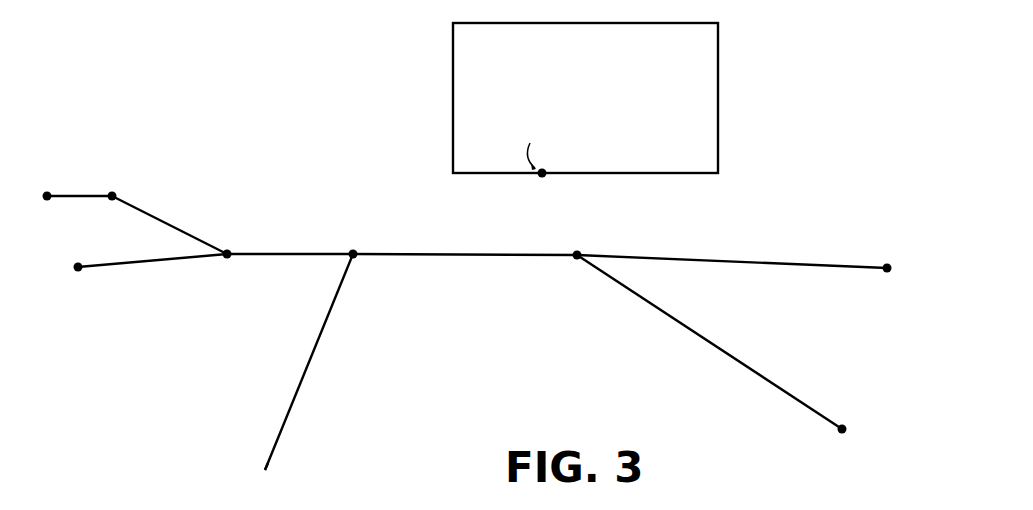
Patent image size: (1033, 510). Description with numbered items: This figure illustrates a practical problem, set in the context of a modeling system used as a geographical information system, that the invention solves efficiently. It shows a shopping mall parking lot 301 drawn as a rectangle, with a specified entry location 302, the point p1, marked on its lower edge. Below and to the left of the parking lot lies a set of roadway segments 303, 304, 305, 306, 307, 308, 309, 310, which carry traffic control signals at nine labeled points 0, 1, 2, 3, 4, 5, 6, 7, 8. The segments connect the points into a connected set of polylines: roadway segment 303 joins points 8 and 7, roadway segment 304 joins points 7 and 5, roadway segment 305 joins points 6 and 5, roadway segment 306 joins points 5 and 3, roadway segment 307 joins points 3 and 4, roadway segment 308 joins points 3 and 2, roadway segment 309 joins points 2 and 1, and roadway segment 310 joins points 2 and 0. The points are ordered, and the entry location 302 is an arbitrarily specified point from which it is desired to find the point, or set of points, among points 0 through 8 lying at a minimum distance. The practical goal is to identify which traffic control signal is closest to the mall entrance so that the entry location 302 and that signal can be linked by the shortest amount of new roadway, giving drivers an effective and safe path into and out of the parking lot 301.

The shopping mall parking lot 301 is at (719, 112).
The entry location 302 is at (544, 177).
The roadway segment 303 is at (79, 194).
The roadway segment 304 is at (192, 219).
The roadway segment 305 is at (178, 262).
The roadway segment 306 is at (281, 257).
The roadway segment 307 is at (292, 407).
The roadway segment 308 is at (506, 258).
The roadway segment 309 is at (788, 265).
The roadway segment 310 is at (727, 354).
The traffic control signal point 0 is at (852, 433).
The traffic control signal point 1 is at (888, 282).
The traffic control signal point 2 is at (568, 266).
The traffic control signal point 3 is at (357, 242).
The traffic control signal point 4 is at (274, 477).
The traffic control signal point 5 is at (231, 267).
The traffic control signal point 6 is at (78, 282).
The traffic control signal point 7 is at (109, 209).
The traffic control signal point 8 is at (49, 209).